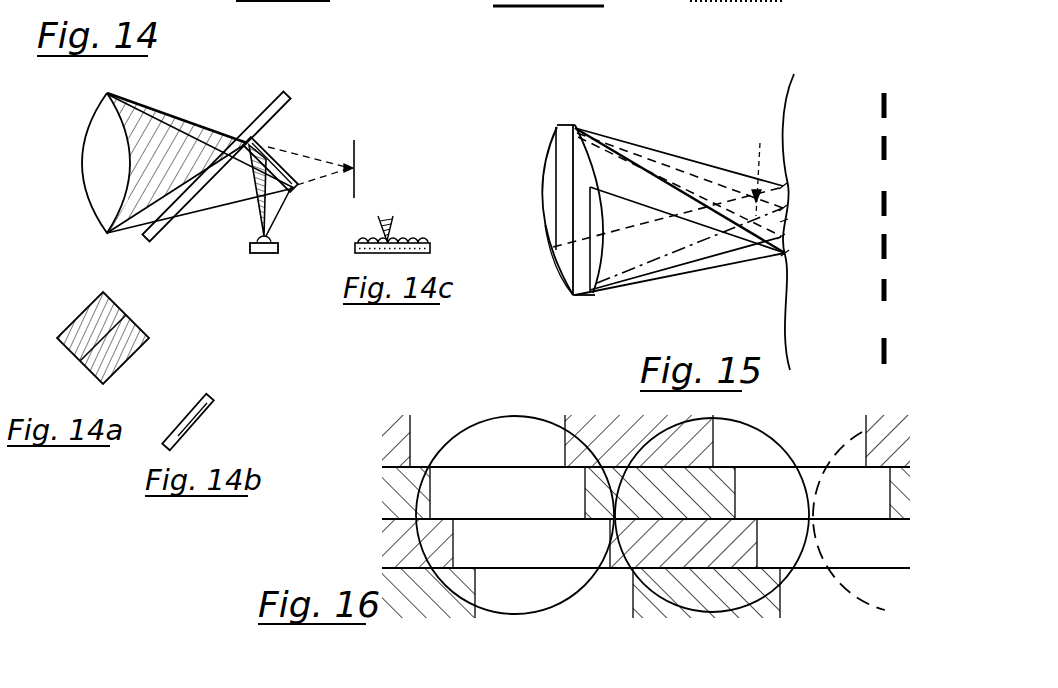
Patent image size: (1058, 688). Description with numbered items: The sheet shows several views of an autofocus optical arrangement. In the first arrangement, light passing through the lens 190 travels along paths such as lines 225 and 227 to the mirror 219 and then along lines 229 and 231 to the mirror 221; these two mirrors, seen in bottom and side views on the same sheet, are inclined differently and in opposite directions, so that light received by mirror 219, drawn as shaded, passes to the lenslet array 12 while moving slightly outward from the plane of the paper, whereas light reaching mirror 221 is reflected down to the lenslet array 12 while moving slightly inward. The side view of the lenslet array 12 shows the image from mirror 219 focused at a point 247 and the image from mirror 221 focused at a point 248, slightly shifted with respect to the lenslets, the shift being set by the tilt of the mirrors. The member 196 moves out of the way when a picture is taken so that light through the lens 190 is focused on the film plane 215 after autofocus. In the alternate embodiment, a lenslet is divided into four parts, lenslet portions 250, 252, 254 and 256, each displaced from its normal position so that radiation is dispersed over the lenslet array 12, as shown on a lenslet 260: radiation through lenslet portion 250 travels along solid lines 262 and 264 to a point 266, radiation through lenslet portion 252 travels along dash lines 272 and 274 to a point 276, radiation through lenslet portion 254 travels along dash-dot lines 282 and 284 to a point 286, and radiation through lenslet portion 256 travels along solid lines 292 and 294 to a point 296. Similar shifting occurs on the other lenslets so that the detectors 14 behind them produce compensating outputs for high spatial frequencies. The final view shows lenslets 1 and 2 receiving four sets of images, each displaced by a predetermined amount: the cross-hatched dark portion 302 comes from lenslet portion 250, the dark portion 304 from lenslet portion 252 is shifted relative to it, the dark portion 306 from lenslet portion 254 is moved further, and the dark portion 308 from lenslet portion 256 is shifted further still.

In FIG. 14, the lens 190 is at (93, 116).
In FIG. 14, the light path line 225 is at (184, 120).
In FIG. 14, the light path line 229 is at (200, 138).
In FIG. 14, the light path line 227 is at (143, 228).
In FIG. 14, the light path line 231 is at (197, 213).
In FIG. 14, the member 196 is at (269, 111).
In FIG. 14, the mirror 219 is at (272, 139).
In FIG. 14A, the mirror 219 is at (78, 310).
In FIG. 14B, the mirror 219 is at (168, 428).
In FIG. 14, the mirror 221 is at (304, 163).
In FIG. 14A, the mirror 221 is at (85, 362).
In FIG. 14B, the mirror 221 is at (210, 407).
In FIG. 14, the film plane 215 is at (358, 149).
In FIG. 14, the lenslet array 12 is at (266, 237).
In FIG. 14C, the lenslet array 12 is at (432, 250).
In FIG. 15, the lenslet array 12 is at (788, 86).
In FIG. 14C, the focus point 247 is at (384, 236).
In FIG. 14C, the focus point 248 is at (390, 241).
In FIG. 15, the lenslet portion 250 is at (545, 164).
In FIG. 15, the lenslet portion 252 is at (575, 127).
In FIG. 15, the lenslet portion 254 is at (566, 286).
In FIG. 15, the lenslet portion 256 is at (577, 298).
In FIG. 15, the solid line 262 is at (693, 165).
In FIG. 15, the dash line 272 is at (578, 133).
In FIG. 15, the solid line 264 is at (735, 198).
In FIG. 15, the dash line 274 is at (762, 168).
In FIG. 15, the dash-dot line 284 is at (668, 190).
In FIG. 15, the dash-dot line 282 is at (676, 283).
In FIG. 15, the solid line 292 is at (721, 274).
In FIG. 15, the solid line 294 is at (763, 254).
In FIG. 15, the focus point 266 is at (784, 186).
In FIG. 15, the focus point 276 is at (784, 208).
In FIG. 15, the lenslet 260 is at (787, 220).
In FIG. 15, the focus point 286 is at (782, 237).
In FIG. 15, the focus point 296 is at (786, 254).
In FIG. 15, the detectors 14 is at (882, 143).
In FIG. 16, the dark image portion 302 is at (562, 446).
In FIG. 16, the dark image portion 304 is at (708, 481).
In FIG. 16, the dark image portion 306 is at (642, 542).
In FIG. 16, the dark image portion 308 is at (658, 600).
In FIG. 16, the lenslet 1 is at (507, 493).
In FIG. 16, the lenslet 2 is at (816, 493).